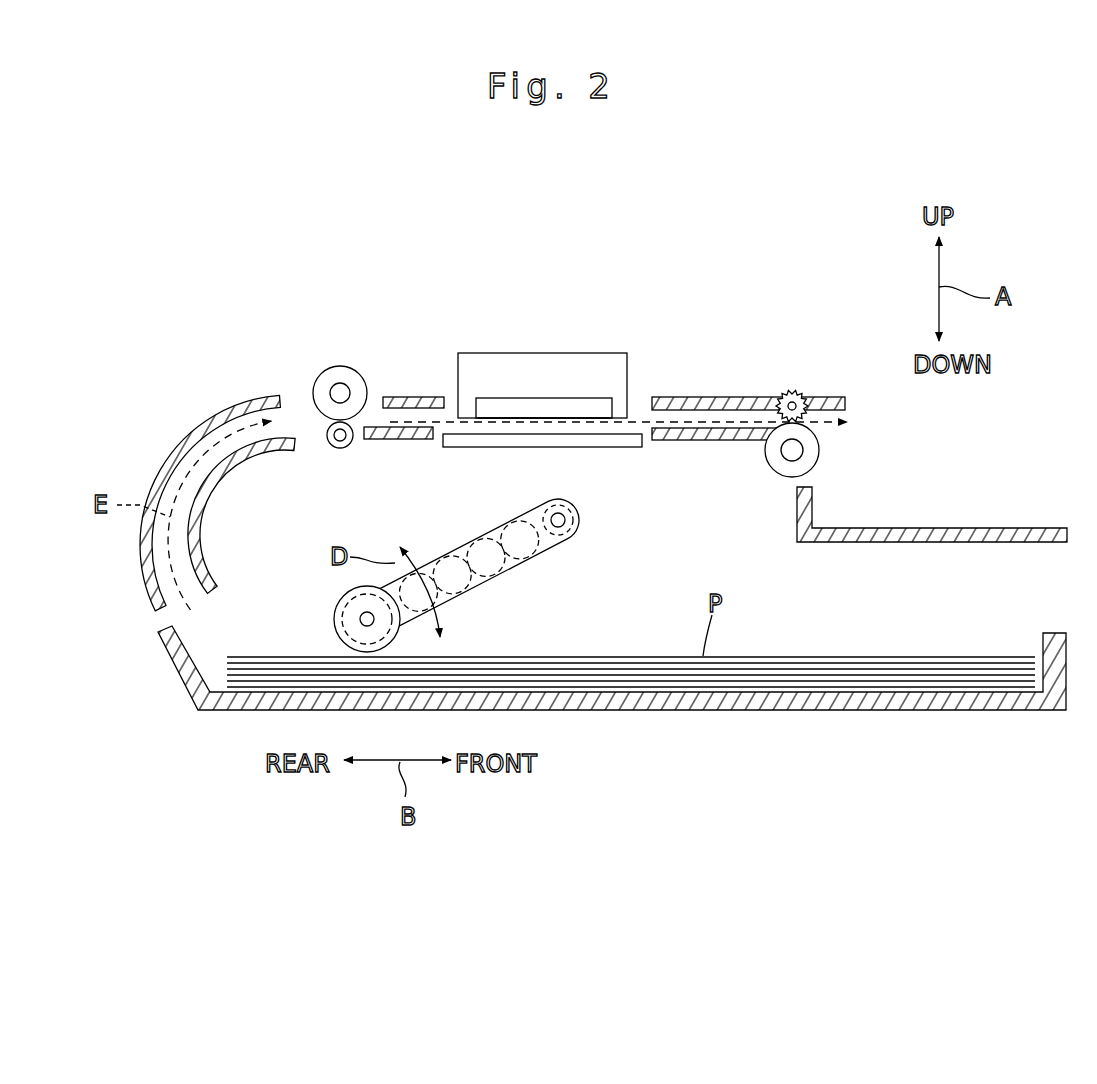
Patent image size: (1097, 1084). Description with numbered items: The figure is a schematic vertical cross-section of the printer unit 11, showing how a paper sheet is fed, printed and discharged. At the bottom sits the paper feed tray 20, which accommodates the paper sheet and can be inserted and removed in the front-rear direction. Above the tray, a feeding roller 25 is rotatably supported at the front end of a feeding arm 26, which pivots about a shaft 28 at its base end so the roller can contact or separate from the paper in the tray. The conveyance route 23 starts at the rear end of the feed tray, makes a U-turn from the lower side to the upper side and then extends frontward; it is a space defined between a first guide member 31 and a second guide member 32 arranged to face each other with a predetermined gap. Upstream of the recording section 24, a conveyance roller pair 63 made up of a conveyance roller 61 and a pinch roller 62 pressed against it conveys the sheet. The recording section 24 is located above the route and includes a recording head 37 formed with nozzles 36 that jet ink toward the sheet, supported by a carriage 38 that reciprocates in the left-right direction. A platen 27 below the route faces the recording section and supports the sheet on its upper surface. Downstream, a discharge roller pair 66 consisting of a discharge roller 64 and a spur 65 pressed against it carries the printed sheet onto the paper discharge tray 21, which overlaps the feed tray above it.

The printer unit 11 is at (415, 243).
The paper feed tray 20 is at (740, 712).
The paper discharge tray 21 is at (938, 528).
The conveyance route 23 is at (180, 480).
The recording section 24 is at (543, 376).
The feeding roller 25 is at (335, 618).
The feeding arm 26 is at (463, 544).
The platen 27 is at (606, 447).
The shaft 28 is at (558, 513).
The first guide member 31 is at (136, 546).
The second guide member 32 is at (200, 530).
The nozzles 36 is at (510, 420).
The recording head 37 is at (548, 397).
The carriage 38 is at (593, 353).
The conveyance roller 61 is at (330, 362).
The pinch roller 62 is at (340, 448).
The conveyance roller pair 63 is at (333, 386).
The discharge roller 64 is at (819, 452).
The spur 65 is at (808, 404).
The discharge roller pair 66 is at (841, 391).